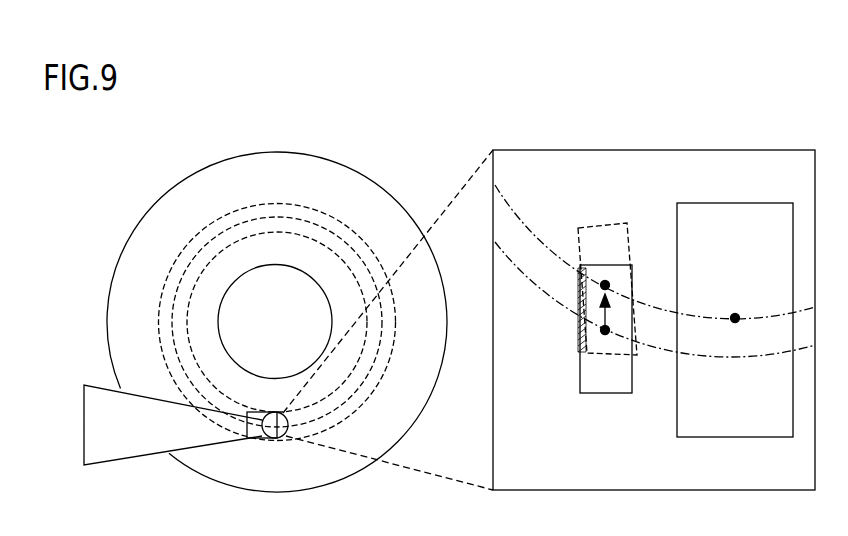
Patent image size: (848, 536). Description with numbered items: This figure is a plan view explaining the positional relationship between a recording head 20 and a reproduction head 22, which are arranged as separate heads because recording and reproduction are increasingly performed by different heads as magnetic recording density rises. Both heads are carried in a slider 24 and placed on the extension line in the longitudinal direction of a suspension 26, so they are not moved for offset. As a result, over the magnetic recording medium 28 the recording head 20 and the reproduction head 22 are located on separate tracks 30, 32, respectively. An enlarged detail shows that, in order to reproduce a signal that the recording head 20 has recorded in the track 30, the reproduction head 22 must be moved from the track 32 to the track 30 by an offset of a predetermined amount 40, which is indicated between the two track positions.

The recording head 20 is at (732, 203).
The reproduction head 22 is at (605, 393).
The slider 24 is at (653, 148).
The suspension 26 is at (157, 436).
The magnetic recording medium 28 is at (295, 190).
The track 30 is at (537, 231).
The track 32 is at (545, 298).
The predetermined amount 40 is at (583, 320).